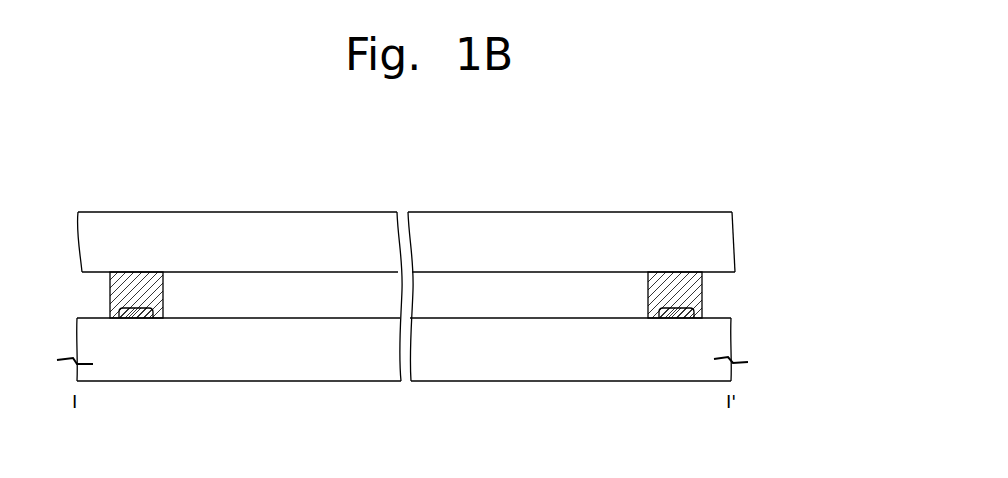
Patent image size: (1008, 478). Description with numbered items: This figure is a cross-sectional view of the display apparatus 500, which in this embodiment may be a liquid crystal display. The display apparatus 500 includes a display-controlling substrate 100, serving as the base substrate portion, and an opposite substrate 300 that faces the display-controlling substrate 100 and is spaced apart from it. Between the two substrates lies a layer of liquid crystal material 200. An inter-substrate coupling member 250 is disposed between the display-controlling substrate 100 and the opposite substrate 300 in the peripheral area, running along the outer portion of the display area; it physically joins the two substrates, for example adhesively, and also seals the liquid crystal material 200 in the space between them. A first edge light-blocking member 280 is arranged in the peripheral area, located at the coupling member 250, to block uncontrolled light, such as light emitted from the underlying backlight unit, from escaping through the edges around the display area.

The display apparatus 500 is at (690, 196).
The opposite substrate 300 is at (720, 240).
The inter-substrate coupling member 250 is at (703, 278).
The first edge light-blocking member 280 is at (703, 308).
The display-controlling substrate 100 is at (720, 338).
The liquid crystal material 200 is at (548, 310).